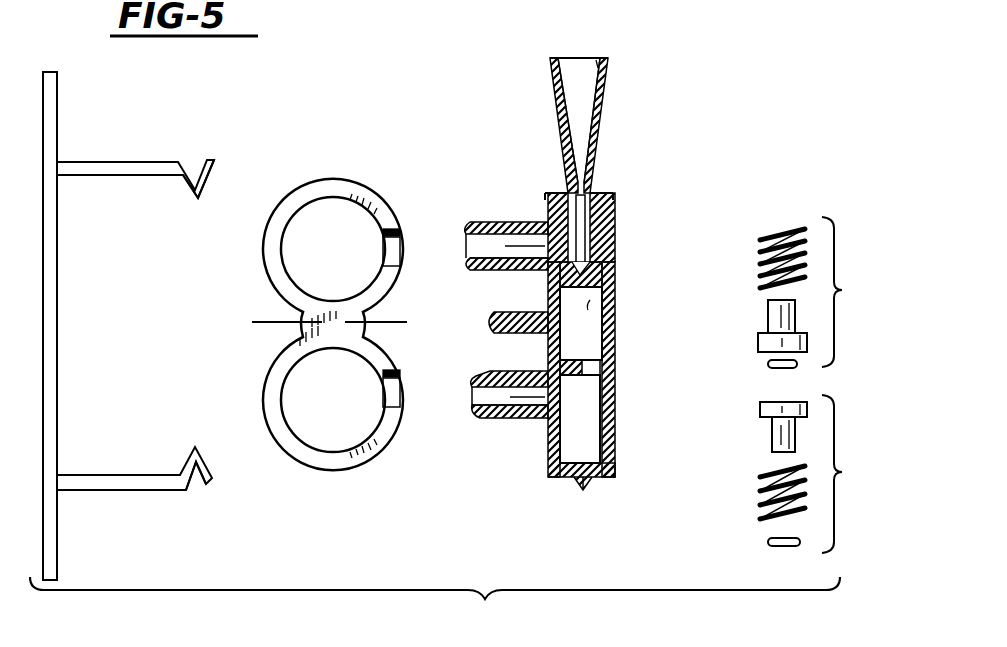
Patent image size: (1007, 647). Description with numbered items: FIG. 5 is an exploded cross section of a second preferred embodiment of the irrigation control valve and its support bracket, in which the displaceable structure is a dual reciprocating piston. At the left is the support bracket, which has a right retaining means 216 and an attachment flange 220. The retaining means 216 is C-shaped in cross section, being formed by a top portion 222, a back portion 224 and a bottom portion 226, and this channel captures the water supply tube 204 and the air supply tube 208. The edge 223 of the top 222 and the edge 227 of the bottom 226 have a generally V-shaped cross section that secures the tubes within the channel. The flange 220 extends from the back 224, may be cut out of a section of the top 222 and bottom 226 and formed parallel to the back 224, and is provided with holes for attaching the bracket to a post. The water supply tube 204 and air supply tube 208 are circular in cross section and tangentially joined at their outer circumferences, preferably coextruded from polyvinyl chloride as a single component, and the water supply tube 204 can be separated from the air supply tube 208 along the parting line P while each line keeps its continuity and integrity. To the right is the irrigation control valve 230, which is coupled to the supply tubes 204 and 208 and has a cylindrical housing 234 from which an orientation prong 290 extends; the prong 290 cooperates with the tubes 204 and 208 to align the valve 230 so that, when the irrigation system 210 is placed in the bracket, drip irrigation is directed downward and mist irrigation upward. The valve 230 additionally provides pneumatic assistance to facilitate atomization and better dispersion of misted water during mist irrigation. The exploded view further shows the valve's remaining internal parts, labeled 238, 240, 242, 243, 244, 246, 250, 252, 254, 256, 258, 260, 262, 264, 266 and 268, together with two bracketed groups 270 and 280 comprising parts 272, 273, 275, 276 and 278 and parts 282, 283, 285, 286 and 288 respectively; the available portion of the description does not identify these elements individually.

The water supply tube 204 is at (268, 398).
The air supply tube 208 is at (331, 179).
The irrigation system 210 is at (435, 602).
The right retaining means 216 is at (662, 0).
The attachment flange 220 is at (57, 103).
The top portion 222 is at (156, 162).
The edge of top portion 223 is at (216, 176).
The back portion 224 is at (57, 255).
The bottom portion 226 is at (134, 490).
The edge of bottom portion 227 is at (214, 483).
The irrigation control valve 230 is at (712, 126).
The cylindrical housing 234 is at (611, 490).
The bottom wall 238 is at (577, 484).
The passage 240 is at (602, 364).
The funnel wall 242 is at (600, 182).
The funnel inlet 243 is at (598, 68).
The funnel wall 244 is at (578, 165).
The orifice 246 is at (602, 380).
The lower chamber 250 is at (601, 432).
The chamber wall 252 is at (604, 298).
The shoulder 254 is at (613, 260).
The valve seat 256 is at (592, 180).
The upper chamber 258 is at (606, 292).
The needle 260 is at (568, 206).
The tube bottom wall 262 is at (526, 420).
The lower inlet tube 264 is at (470, 405).
The upper inlet tube 266 is at (510, 224).
The tube wall 268 is at (470, 265).
The lower valve subassembly 270 is at (771, 484).
The lower plunger stem 272 is at (756, 450).
The lower plunger flange 273 is at (760, 410).
The lower spring 275 is at (758, 500).
The spring end 276 is at (758, 519).
The lower seal 278 is at (766, 545).
The upper valve subassembly 280 is at (759, 279).
The upper plunger stem 282 is at (760, 318).
The upper plunger flange 283 is at (758, 343).
The plunger 285 is at (770, 312).
The upper spring 286 is at (776, 225).
The upper seal 288 is at (768, 365).
The orientation prong 290 is at (490, 328).
The parting line P is at (254, 322).